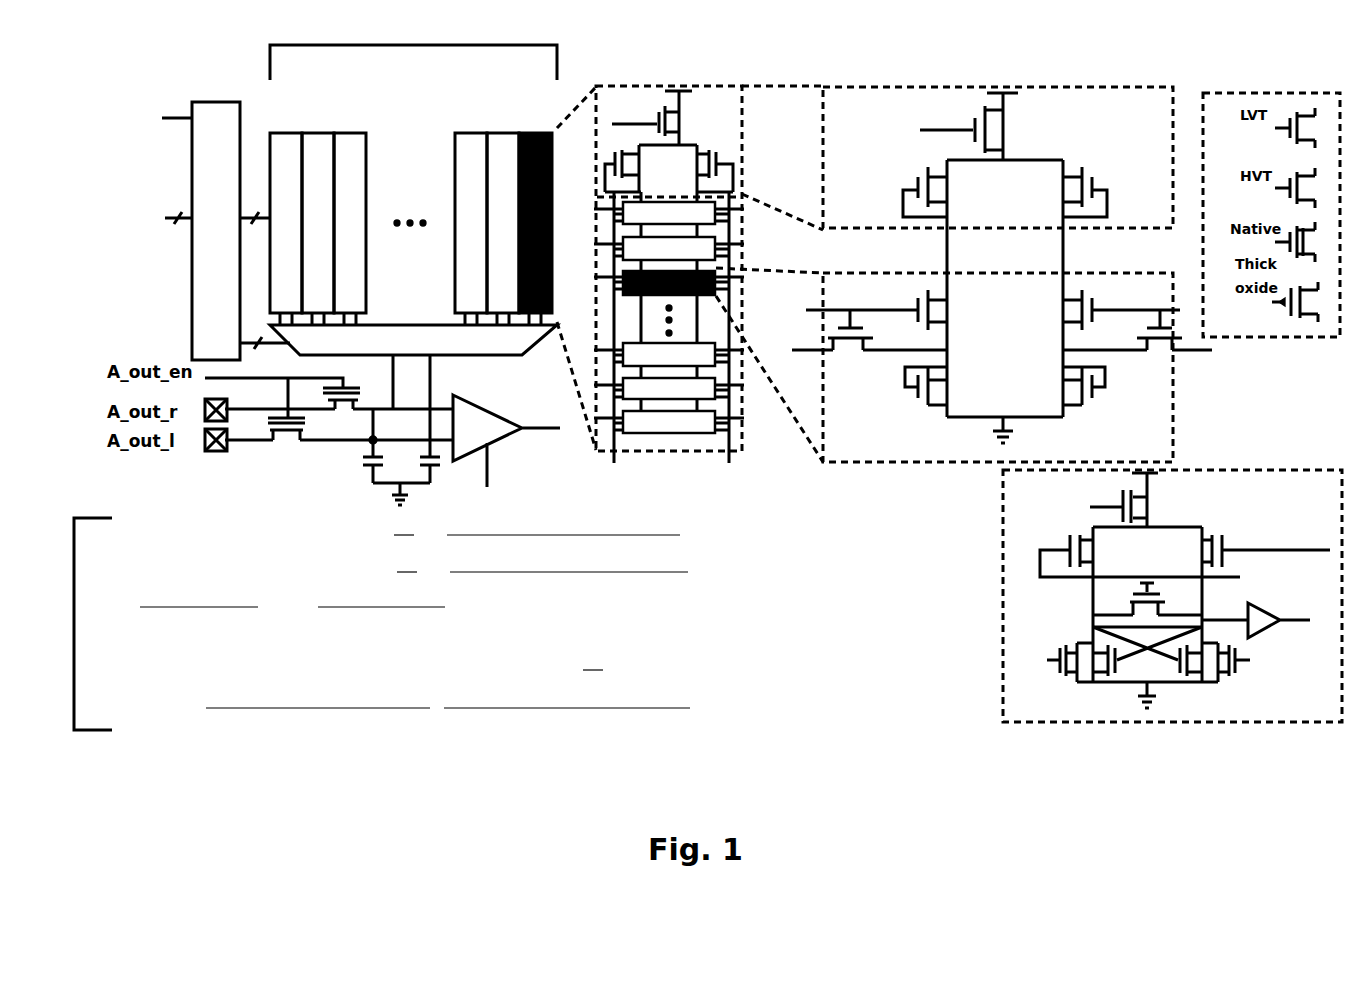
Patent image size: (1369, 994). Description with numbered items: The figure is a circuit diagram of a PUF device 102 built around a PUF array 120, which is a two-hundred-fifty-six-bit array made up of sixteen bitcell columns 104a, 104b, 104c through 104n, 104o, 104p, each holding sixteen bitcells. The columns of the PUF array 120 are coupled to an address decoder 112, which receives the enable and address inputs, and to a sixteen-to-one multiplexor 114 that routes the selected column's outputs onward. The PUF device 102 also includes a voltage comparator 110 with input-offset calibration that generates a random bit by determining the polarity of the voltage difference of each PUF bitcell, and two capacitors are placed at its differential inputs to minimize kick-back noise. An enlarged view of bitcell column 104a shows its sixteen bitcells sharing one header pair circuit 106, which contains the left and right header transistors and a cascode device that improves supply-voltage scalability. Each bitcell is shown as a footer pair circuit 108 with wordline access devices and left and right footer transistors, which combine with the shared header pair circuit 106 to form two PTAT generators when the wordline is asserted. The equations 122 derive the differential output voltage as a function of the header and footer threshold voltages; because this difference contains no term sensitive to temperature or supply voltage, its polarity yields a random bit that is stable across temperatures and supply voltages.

The PUF device 102 is at (149, 150).
The address decoder 112 is at (241, 231).
The PUF array 120 is at (546, 255).
The bitcell column 104p is at (286, 205).
The bitcell column 104o is at (318, 206).
The bitcell column 104n is at (350, 205).
The bitcell column 104c is at (471, 206).
The bitcell column 104b is at (503, 205).
The bitcell column 104a is at (671, 277).
The multiplexor 114 is at (413, 340).
The voltage comparator 110 is at (887, 547).
The header pair circuit 106 is at (998, 252).
The footer pair circuit 108 is at (995, 367).
The equations 122 is at (514, 624).